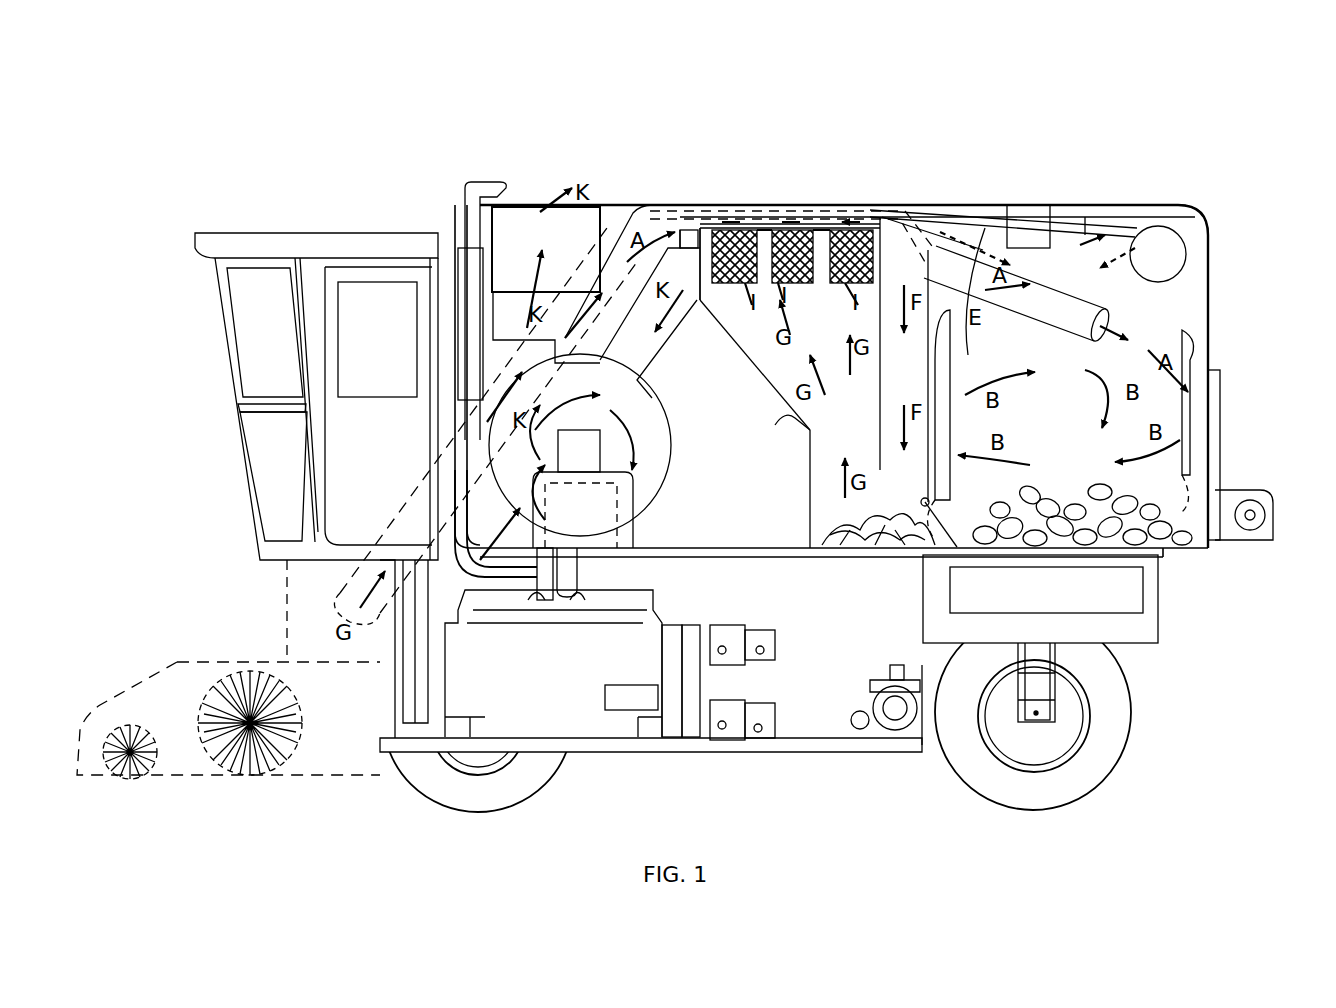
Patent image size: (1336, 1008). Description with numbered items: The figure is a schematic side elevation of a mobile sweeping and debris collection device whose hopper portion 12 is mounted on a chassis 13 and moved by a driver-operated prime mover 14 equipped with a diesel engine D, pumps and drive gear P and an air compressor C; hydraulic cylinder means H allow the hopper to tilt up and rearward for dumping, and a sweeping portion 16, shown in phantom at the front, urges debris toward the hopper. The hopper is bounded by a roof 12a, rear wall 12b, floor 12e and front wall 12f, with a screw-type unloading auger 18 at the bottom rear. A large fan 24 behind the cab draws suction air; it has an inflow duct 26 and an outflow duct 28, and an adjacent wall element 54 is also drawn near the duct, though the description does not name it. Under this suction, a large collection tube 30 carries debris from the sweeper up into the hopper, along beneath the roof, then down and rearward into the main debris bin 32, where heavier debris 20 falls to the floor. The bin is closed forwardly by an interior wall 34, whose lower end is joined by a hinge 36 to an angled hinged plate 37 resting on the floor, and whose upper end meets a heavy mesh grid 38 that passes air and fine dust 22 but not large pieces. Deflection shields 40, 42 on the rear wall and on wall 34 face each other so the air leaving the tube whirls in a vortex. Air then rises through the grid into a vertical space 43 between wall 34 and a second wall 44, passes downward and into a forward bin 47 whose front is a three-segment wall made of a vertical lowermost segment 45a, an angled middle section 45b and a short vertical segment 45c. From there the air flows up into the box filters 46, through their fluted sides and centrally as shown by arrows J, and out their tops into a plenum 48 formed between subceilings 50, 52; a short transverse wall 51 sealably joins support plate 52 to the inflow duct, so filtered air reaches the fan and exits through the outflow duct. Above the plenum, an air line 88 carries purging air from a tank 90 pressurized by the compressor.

The hopper portion 12 is at (1117, 200).
The roof 12a is at (980, 250).
The rear wall 12b is at (1208, 292).
The floor 12e is at (748, 553).
The front wall 12f is at (460, 235).
The chassis 13 is at (1165, 635).
The prime mover 14 is at (370, 225).
The sweeping portion 16 is at (147, 690).
The unloading auger 18 is at (1255, 510).
The larger, heavier debris 20 is at (1165, 530).
The finer, dusty debris 22 is at (885, 540).
The fan 24 is at (648, 440).
The inflow duct 26 is at (652, 335).
The outflow duct 28 is at (510, 230).
The collection tube 30 is at (650, 215).
The main debris bin 32 is at (1172, 305).
The interior wall 34 is at (930, 320).
The hinge 36 is at (935, 505).
The hinged plate 37 is at (962, 535).
The mesh grid 38 is at (1015, 228).
The deflection shield 40 is at (1190, 385).
The deflection shield 42 is at (950, 375).
The vertical space 43 is at (882, 360).
The wall 44 is at (880, 375).
The lowermost segment 45a is at (810, 470).
The middle section 45b is at (800, 400).
The short vertical segment 45c is at (702, 290).
The box filters 46 is at (855, 228).
The bin 47 is at (840, 430).
The plenum 48 is at (740, 225).
The subceiling 50 is at (770, 226).
The short transverse wall 51 is at (684, 240).
The support plate 52 is at (700, 240).
The duct partition 54 is at (676, 349).
The air line 88 is at (1040, 215).
The tank 90 is at (1160, 255).
The arrows J is at (800, 228).
The diesel engine D is at (583, 712).
The hydraulic cylinder means H is at (550, 573).
The pumps and drive gear P is at (725, 725).
The air compressor C is at (890, 712).